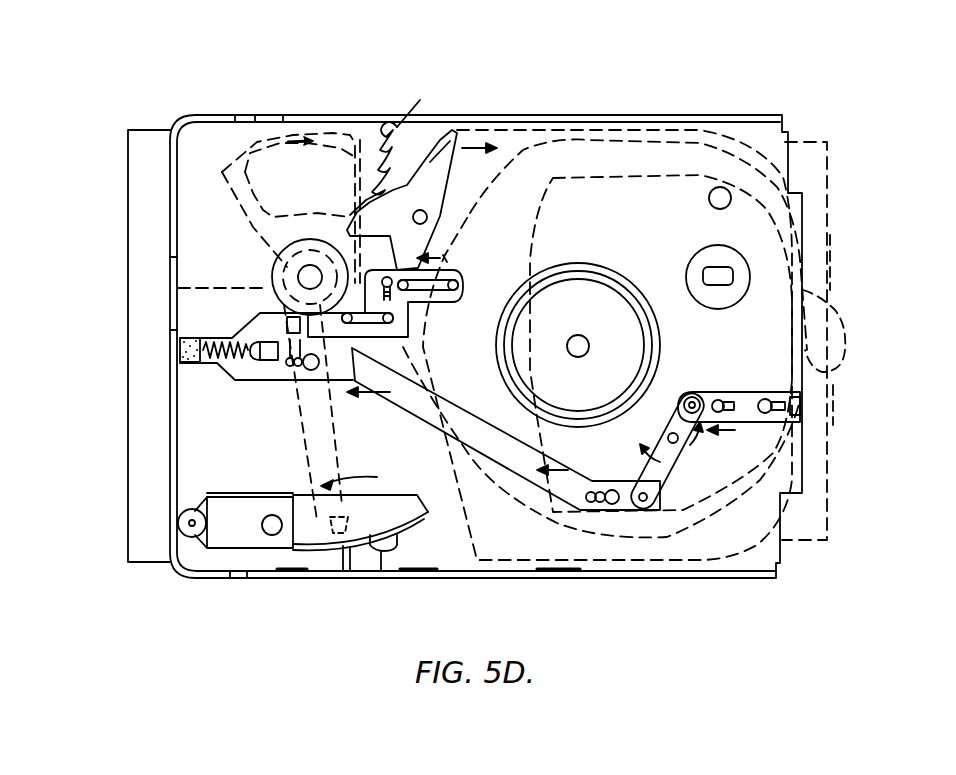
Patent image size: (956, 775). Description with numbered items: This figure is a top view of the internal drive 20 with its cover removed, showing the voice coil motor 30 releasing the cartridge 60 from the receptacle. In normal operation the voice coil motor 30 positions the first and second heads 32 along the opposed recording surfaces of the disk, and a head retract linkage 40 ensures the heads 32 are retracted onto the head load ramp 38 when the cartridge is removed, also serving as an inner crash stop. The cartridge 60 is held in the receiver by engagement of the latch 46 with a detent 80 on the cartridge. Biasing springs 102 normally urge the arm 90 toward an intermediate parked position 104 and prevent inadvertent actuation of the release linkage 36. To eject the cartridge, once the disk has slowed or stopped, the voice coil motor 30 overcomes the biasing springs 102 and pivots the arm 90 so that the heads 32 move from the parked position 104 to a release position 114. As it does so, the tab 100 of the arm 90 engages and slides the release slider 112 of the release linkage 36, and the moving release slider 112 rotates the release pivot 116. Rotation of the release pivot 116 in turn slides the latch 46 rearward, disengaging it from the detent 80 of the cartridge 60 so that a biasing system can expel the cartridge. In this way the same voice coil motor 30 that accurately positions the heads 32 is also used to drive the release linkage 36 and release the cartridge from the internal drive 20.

The internal drive 20 is at (242, 72).
The voice coil motor 30 is at (190, 217).
The heads 32 is at (341, 519).
The release linkage 36 is at (562, 448).
The head load ramp 38 is at (190, 502).
The head retract linkage 40 is at (433, 229).
The latch 46 is at (790, 398).
The cartridge 60 is at (830, 170).
The detent 80 is at (833, 412).
The arm 90 is at (333, 433).
The tab 100 is at (293, 365).
The biasing springs 102 is at (220, 365).
The parked position 104 is at (382, 553).
The release slider 112 is at (458, 417).
The release position 114 is at (345, 548).
The release pivot 116 is at (672, 455).